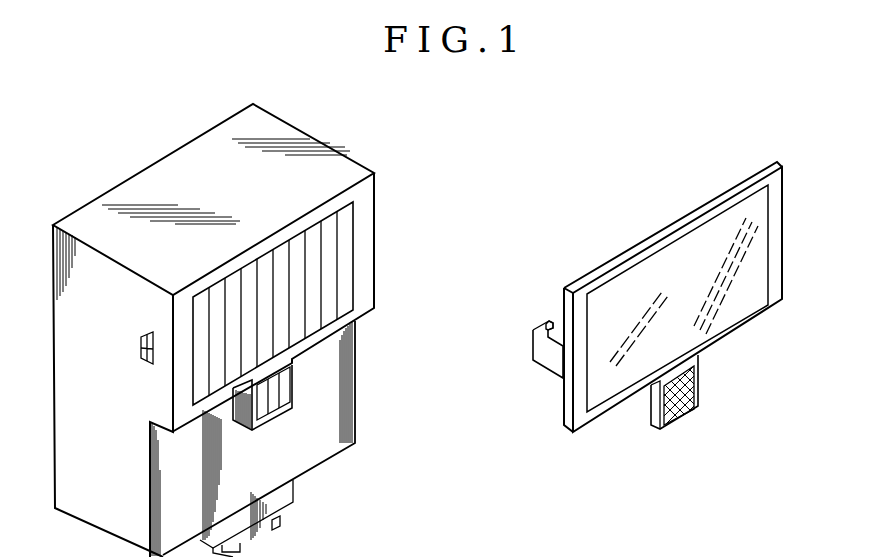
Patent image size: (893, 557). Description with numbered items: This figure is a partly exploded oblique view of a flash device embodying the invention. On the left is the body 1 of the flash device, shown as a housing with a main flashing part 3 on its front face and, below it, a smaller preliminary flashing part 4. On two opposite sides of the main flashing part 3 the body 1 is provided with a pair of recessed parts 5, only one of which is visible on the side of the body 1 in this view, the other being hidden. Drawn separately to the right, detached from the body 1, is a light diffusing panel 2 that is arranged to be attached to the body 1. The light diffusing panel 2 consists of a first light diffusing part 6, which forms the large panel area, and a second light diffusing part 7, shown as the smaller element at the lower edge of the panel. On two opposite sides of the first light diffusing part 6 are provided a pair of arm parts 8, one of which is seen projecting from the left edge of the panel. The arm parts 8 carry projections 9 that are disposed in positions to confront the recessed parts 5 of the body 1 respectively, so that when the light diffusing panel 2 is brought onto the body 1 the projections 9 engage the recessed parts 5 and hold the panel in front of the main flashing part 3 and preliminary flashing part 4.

The body 1 is at (300, 140).
The light diffusing panel 2 is at (582, 297).
The main flashing part 3 is at (333, 267).
The preliminary flashing part 4 is at (280, 390).
The recessed parts 5 is at (142, 352).
The first light diffusing part 6 is at (728, 305).
The second light diffusing part 7 is at (686, 416).
The arm parts 8 is at (553, 358).
The projections 9 is at (553, 320).